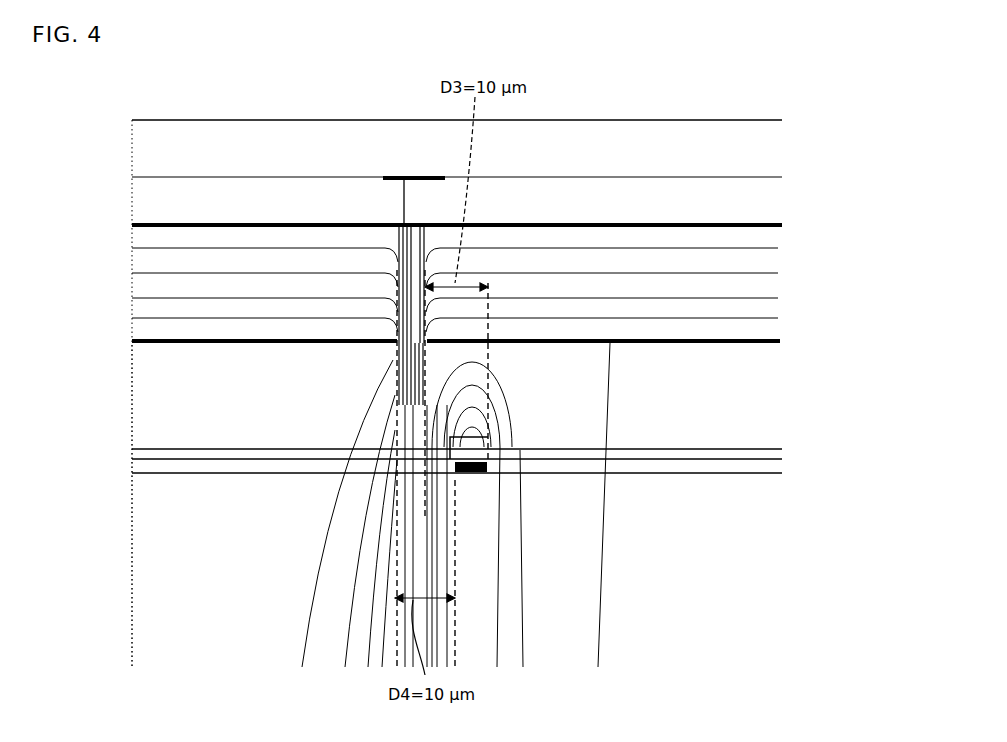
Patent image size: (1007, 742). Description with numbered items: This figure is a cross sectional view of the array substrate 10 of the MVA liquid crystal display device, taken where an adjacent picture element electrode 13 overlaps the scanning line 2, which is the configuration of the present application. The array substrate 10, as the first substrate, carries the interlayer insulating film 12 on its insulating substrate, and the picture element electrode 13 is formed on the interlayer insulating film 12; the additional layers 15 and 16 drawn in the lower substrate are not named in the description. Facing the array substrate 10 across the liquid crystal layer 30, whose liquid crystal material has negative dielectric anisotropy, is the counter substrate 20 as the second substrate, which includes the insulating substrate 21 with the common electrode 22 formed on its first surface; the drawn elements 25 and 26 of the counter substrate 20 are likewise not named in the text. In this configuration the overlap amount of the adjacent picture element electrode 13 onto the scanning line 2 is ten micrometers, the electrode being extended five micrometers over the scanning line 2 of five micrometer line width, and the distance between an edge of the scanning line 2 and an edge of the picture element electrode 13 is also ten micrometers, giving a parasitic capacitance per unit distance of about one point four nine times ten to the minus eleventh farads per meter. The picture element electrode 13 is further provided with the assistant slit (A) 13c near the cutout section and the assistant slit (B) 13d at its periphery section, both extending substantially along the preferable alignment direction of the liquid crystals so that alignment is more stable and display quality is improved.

The scanning line 2 is at (472, 478).
The array substrate 10 is at (449, 512).
The interlayer insulating film 12 is at (138, 396).
The picture element electrode 13 is at (235, 338).
The assistant slit (A) 13c is at (427, 328).
The assistant slit (B) 13d is at (397, 328).
The insulating film 15 is at (135, 468).
The insulating film 16 is at (138, 452).
The counter substrate 20 is at (481, 150).
The insulating substrate 21 is at (690, 132).
The common electrode 22 is at (558, 222).
The light shielding layer 25 is at (258, 200).
The light shielding portion 26 is at (398, 175).
The liquid crystal layer 30 is at (776, 290).